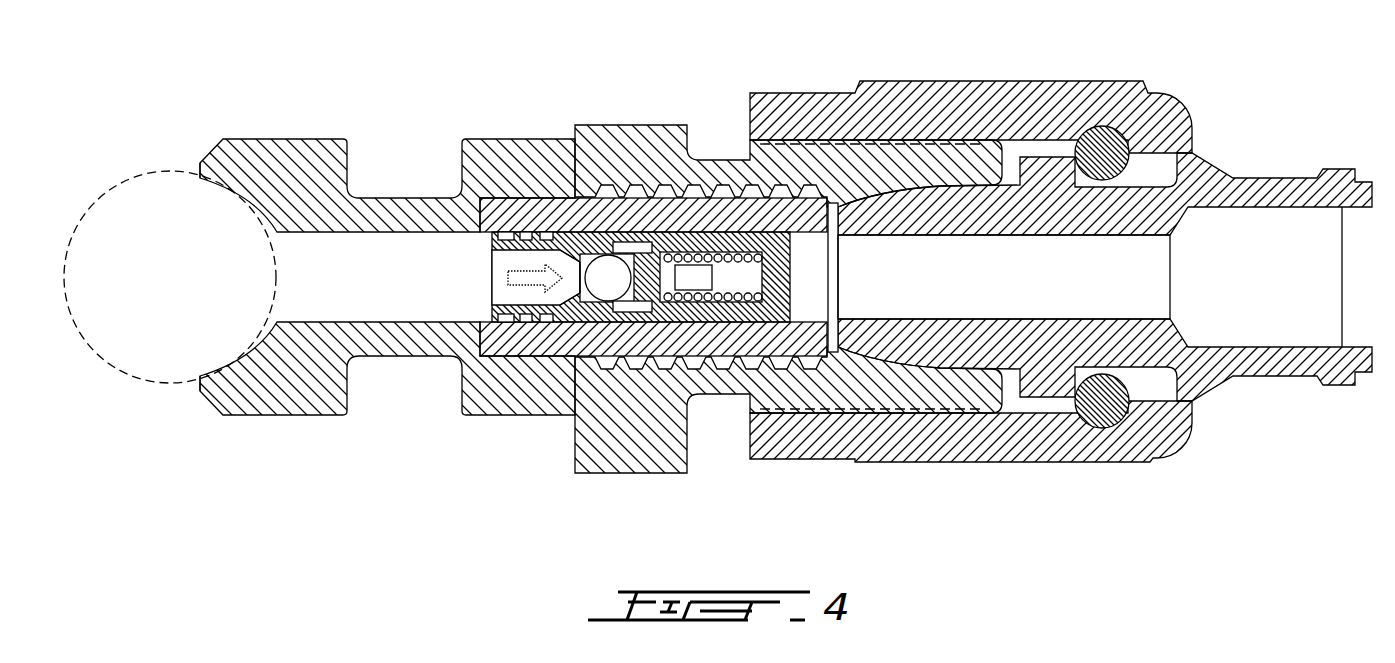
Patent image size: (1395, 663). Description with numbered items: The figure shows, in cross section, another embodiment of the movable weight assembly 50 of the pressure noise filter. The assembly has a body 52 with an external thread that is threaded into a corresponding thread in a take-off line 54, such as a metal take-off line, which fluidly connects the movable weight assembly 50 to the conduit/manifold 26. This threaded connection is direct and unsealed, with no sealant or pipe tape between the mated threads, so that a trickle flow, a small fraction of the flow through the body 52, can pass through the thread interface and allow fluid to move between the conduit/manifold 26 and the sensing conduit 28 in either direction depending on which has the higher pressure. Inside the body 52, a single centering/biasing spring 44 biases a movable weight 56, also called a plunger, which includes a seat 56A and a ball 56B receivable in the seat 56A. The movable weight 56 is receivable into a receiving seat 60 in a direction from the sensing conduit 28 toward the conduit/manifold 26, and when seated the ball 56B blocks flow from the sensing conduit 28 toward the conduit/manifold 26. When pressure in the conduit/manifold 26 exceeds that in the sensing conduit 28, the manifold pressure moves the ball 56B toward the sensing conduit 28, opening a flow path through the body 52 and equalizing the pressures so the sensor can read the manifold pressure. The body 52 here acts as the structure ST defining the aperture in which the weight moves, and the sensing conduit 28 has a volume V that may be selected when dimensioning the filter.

The conduit/manifold 26 is at (184, 292).
The sensing conduit 28 is at (1053, 203).
The centering/biasing spring 44 is at (725, 260).
The movable weight assembly 50 is at (698, 203).
The body 52 is at (768, 343).
The take-off line 54 is at (388, 292).
The movable weight 56 is at (582, 316).
The seat 56A is at (642, 290).
The ball 56B is at (608, 285).
The receiving seat 60 is at (585, 253).
The structure ST is at (627, 163).
The volume V is at (1046, 292).